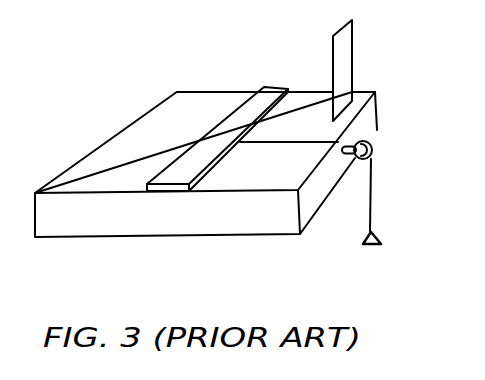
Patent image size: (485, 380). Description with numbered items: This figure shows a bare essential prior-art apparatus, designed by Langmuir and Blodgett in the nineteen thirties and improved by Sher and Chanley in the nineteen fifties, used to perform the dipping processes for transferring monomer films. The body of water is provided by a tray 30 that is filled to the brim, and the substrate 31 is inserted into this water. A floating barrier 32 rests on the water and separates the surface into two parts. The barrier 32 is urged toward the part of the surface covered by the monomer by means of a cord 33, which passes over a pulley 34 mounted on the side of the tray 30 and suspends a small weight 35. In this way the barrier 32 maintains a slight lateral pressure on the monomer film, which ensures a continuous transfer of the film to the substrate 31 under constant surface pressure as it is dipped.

The tray 30 is at (378, 106).
The substrate 31 is at (353, 62).
The floating barrier 32 is at (282, 88).
The cord 33 is at (373, 200).
The pulley 34 is at (375, 152).
The weight 35 is at (383, 243).